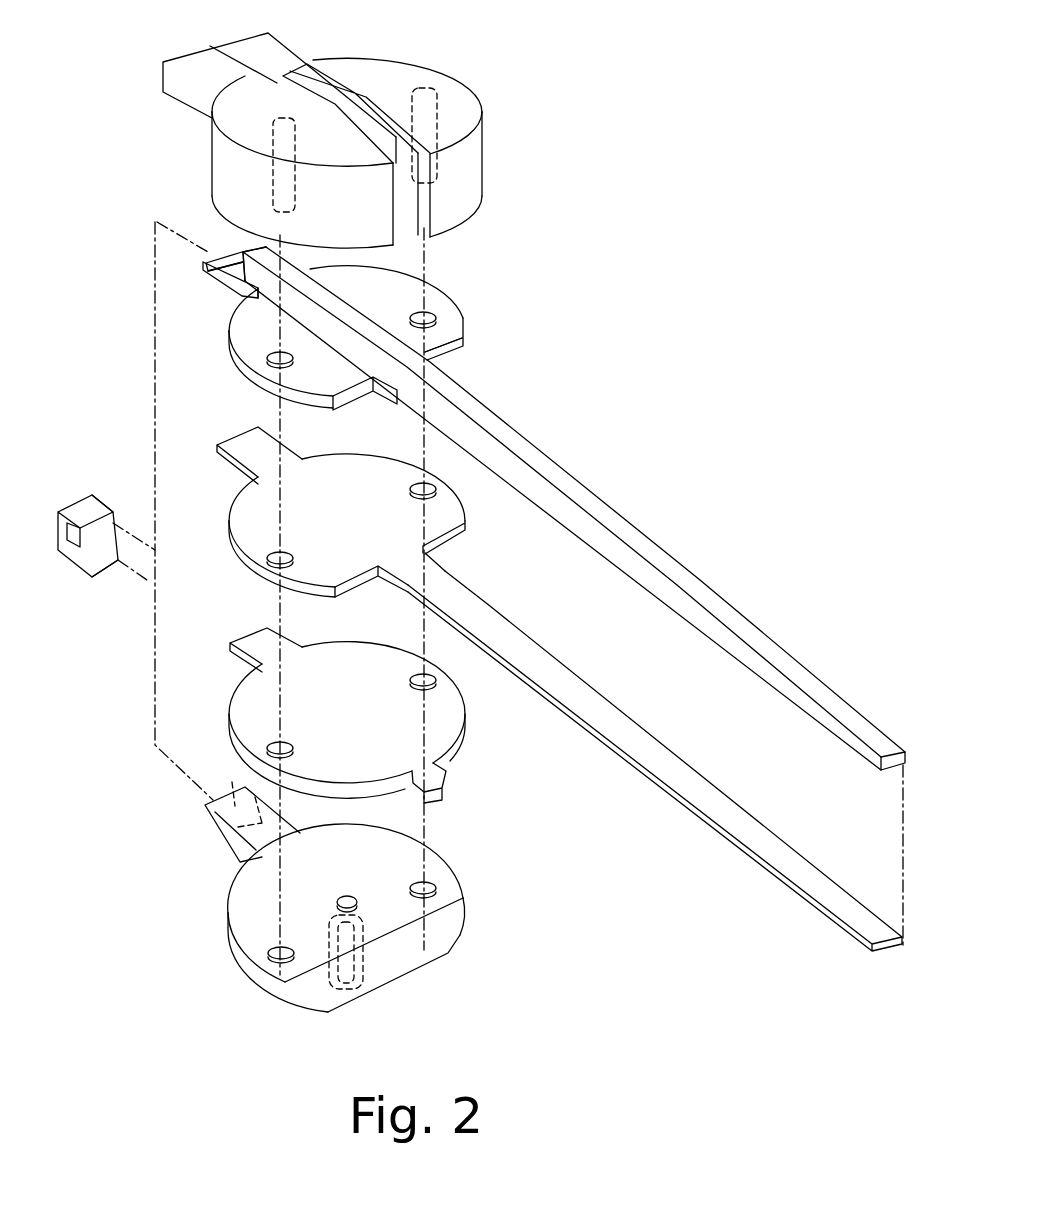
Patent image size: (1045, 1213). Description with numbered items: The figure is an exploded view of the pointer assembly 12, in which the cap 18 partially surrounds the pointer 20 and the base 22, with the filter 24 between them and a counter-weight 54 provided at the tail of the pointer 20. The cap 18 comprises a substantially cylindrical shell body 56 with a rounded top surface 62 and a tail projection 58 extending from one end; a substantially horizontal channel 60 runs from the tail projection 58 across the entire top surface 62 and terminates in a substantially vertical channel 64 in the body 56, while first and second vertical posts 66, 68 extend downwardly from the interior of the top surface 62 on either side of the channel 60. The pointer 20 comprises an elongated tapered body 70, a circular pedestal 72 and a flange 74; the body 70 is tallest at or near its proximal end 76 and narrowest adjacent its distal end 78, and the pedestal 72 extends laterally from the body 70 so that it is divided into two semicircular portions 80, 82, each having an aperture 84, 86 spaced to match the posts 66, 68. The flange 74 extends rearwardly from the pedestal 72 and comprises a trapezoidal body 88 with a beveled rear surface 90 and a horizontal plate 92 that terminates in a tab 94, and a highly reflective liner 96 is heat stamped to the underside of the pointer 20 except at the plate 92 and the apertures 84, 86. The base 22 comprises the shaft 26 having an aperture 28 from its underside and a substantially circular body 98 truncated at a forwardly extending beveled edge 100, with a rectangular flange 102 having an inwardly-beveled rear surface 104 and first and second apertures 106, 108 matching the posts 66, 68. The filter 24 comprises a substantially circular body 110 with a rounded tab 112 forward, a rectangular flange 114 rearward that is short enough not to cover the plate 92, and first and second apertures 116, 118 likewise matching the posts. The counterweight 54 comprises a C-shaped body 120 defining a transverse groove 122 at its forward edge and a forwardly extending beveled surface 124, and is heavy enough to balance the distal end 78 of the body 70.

The pointer assembly 12 is at (723, 366).
The cap 18 is at (357, 135).
The pointer 20 is at (535, 476).
The base 22 is at (358, 887).
The filter 24 is at (376, 695).
The shaft 26 is at (354, 988).
The aperture 28 is at (352, 898).
The counter-weight 54 is at (83, 547).
The shell body 56 is at (482, 172).
The tail projection 58 is at (268, 50).
The horizontal channel 60 is at (396, 140).
The top surface 62 is at (388, 72).
The vertical channel 64 is at (400, 215).
The first vertical post 66 is at (270, 180).
The second vertical post 68 is at (437, 128).
The tapered body 70 is at (535, 476).
The pedestal 72 is at (349, 359).
The flange 74 is at (226, 289).
The proximal end 76 is at (250, 252).
The distal end 78 is at (888, 752).
The semicircular portion 80 is at (333, 373).
The semicircular portion 82 is at (452, 348).
The aperture 84 is at (273, 353).
The aperture 86 is at (437, 320).
The trapezoidal body 88 is at (243, 303).
The beveled rear surface 90 is at (237, 265).
The horizontal plate 92 is at (215, 281).
The tab 94 is at (207, 262).
The liner 96 is at (640, 720).
The circular body 98 is at (253, 895).
The beveled edge 100 is at (443, 935).
The rectangular flange 102 is at (240, 862).
The rear surface 104 is at (225, 785).
The first aperture 106 is at (270, 957).
The second aperture 108 is at (430, 882).
The circular body 110 is at (352, 667).
The rounded tab 112 is at (442, 782).
The rectangular flange 114 is at (267, 640).
The first aperture 116 is at (292, 752).
The second aperture 118 is at (425, 688).
The C-shaped body 120 is at (57, 540).
The transverse groove 122 is at (97, 527).
The beveled surface 124 is at (110, 567).